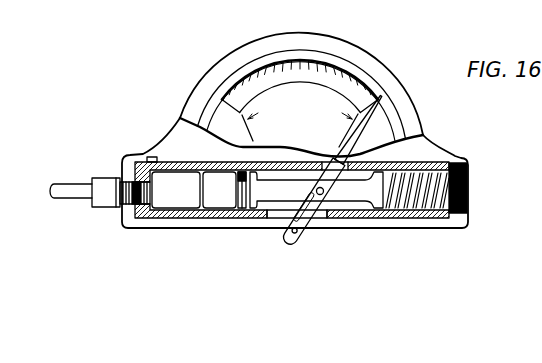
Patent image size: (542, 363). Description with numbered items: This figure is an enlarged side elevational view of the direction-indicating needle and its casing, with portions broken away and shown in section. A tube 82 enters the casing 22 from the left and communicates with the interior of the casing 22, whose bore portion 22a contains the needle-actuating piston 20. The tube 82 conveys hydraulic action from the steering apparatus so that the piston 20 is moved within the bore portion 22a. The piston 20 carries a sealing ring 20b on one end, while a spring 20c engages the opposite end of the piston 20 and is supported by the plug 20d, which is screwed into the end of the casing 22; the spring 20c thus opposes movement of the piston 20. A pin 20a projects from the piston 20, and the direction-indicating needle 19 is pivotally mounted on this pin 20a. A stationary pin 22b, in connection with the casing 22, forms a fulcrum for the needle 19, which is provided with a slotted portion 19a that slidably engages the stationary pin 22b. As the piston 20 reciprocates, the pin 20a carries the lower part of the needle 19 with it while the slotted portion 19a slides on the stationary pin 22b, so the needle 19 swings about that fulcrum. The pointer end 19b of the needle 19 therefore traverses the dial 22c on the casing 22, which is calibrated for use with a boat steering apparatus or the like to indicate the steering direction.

The direction-indicating needle 19 is at (397, 103).
The slotted portion 19a is at (312, 227).
The pointer end 19b is at (373, 100).
The needle-actuating piston 20 is at (193, 228).
The pin 20a is at (327, 198).
The sealing ring 20b is at (238, 208).
The spring 20c is at (425, 196).
The plug 20d is at (469, 184).
The casing 22 is at (426, 142).
The bore portion 22a is at (182, 214).
The stationary pin 22b is at (295, 232).
The dial 22c is at (333, 68).
The tube 82 is at (80, 190).